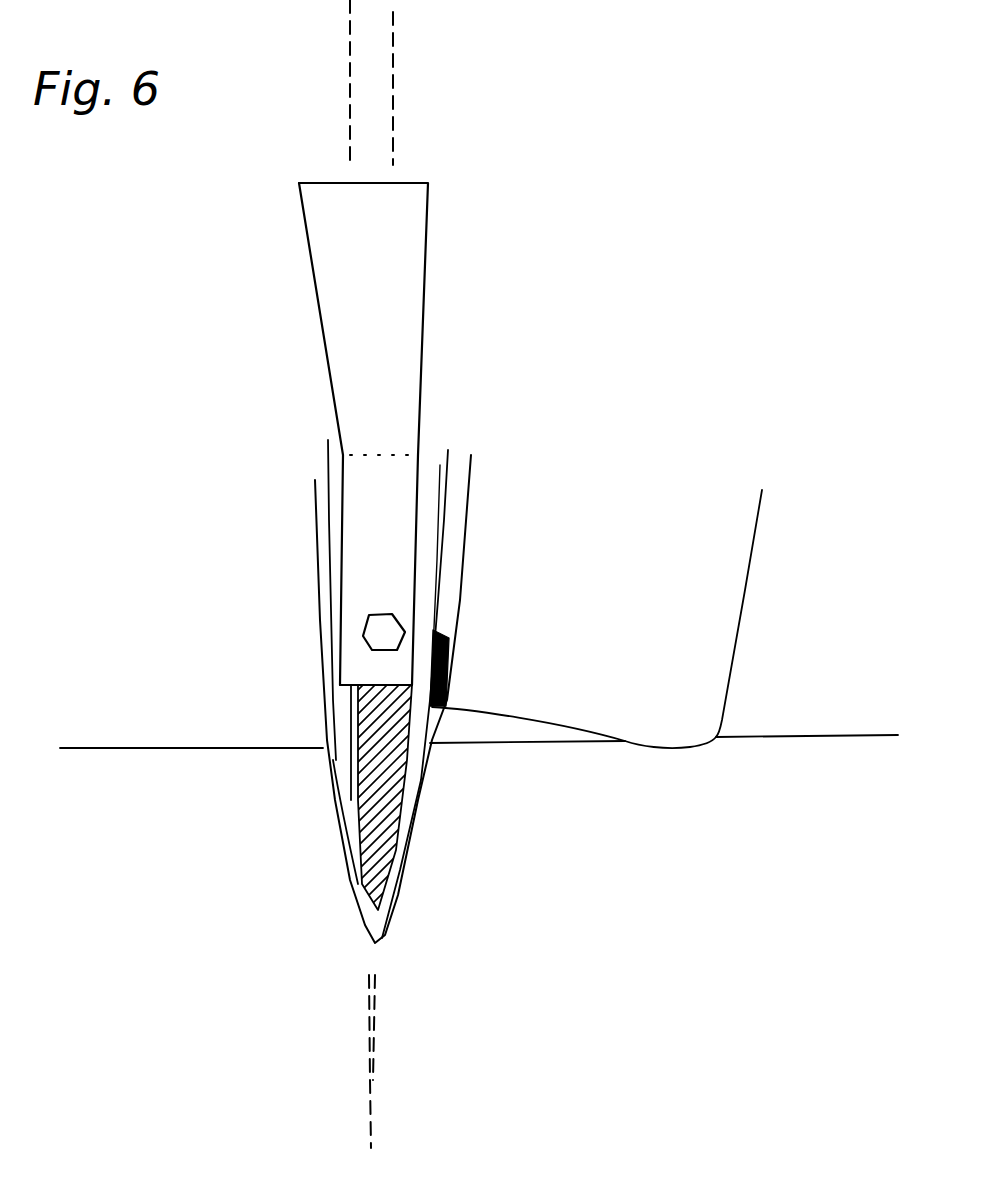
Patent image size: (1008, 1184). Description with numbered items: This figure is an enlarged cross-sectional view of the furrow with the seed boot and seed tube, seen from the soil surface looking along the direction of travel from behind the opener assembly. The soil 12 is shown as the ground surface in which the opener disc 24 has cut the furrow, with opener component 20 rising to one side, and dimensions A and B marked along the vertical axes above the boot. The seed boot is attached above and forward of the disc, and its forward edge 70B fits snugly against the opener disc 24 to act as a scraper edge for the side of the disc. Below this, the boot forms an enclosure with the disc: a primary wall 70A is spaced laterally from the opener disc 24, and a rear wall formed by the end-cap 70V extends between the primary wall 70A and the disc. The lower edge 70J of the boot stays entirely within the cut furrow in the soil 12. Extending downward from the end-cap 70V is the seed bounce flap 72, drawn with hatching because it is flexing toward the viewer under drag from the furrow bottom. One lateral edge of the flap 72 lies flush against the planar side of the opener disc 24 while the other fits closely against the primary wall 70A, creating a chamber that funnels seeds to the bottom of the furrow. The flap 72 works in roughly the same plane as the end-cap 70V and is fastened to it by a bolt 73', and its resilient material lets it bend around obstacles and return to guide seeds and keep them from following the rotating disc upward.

The dimension A is at (346, 29).
The dimension B is at (397, 31).
The soil 12 is at (808, 731).
The opener component 20 is at (768, 500).
The opener disc 24 is at (448, 541).
The end-cap 70V is at (314, 318).
The forward edge 70B is at (331, 596).
The primary wall 70A is at (343, 753).
The lower edge 70J is at (346, 809).
The seed bounce flap 72 is at (374, 914).
The bolt 73' is at (327, 654).